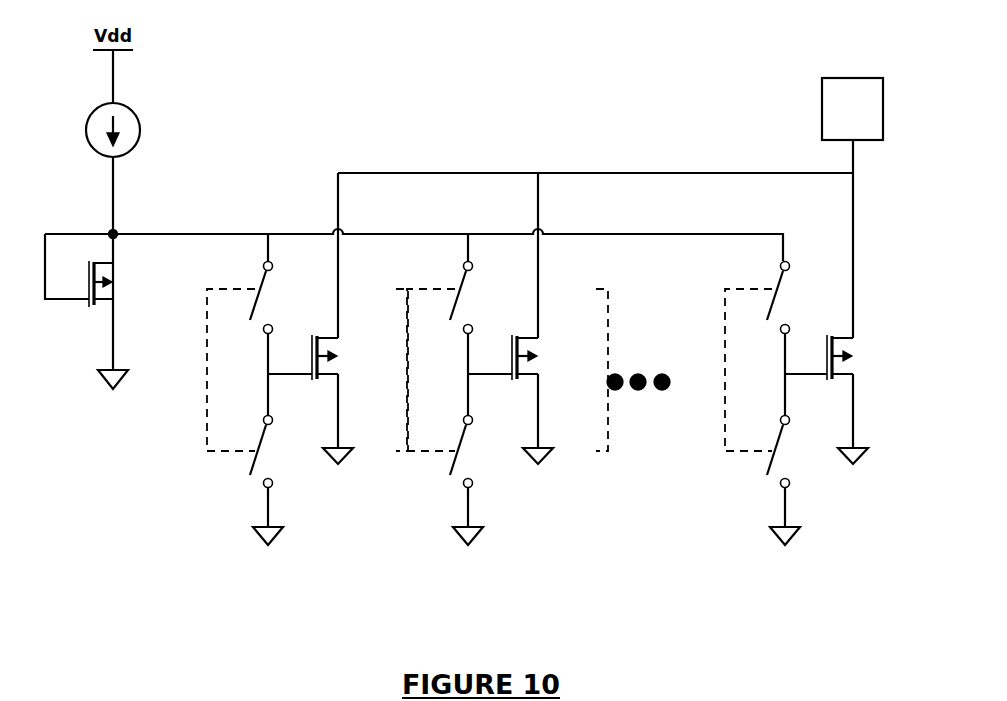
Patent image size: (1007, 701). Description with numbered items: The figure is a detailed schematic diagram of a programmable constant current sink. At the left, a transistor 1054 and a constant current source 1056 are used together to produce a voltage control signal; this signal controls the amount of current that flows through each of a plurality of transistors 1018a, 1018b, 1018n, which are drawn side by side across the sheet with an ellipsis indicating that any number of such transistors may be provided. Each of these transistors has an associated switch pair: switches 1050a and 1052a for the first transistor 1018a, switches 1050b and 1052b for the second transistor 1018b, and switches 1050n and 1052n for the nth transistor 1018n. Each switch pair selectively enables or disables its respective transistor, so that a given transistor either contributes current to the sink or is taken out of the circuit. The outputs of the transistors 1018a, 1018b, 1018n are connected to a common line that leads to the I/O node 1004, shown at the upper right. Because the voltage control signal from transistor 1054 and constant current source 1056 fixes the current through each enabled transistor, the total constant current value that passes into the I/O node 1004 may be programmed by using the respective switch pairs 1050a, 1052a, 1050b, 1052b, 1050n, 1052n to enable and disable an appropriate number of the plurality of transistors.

The I/O node 1004 is at (862, 78).
The transistor 1018a is at (338, 325).
The transistor 1018b is at (538, 325).
The transistor 1018n is at (853, 325).
The switch 1050a is at (259, 293).
The switch 1050b is at (459, 293).
The switch 1050n is at (776, 293).
The switch 1052a is at (259, 448).
The switch 1052b is at (459, 448).
The switch 1052n is at (776, 448).
The transistor 1054 is at (113, 263).
The constant current source 1056 is at (137, 139).